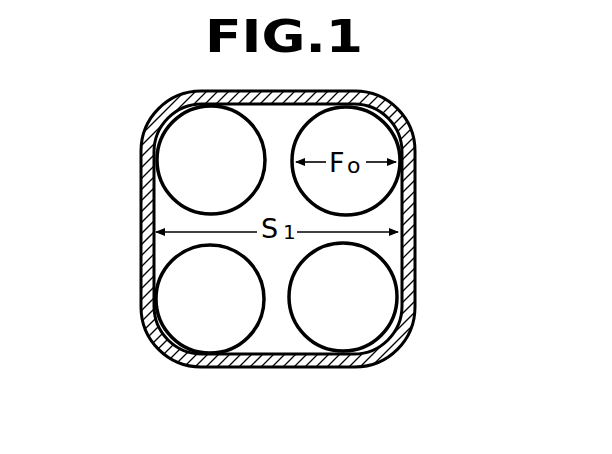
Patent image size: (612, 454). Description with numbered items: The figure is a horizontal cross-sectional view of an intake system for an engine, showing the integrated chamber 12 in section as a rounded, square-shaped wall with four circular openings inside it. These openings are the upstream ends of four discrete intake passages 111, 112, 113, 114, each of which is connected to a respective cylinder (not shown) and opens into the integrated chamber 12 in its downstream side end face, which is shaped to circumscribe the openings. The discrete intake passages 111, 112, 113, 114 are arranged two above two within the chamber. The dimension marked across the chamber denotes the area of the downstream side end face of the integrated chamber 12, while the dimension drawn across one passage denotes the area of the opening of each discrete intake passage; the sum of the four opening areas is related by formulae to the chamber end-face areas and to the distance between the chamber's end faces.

The integrated chamber 12 is at (288, 346).
The discrete intake passage 111 is at (162, 154).
The discrete intake passage 112 is at (163, 305).
The discrete intake passage 113 is at (375, 138).
The discrete intake passage 114 is at (387, 305).